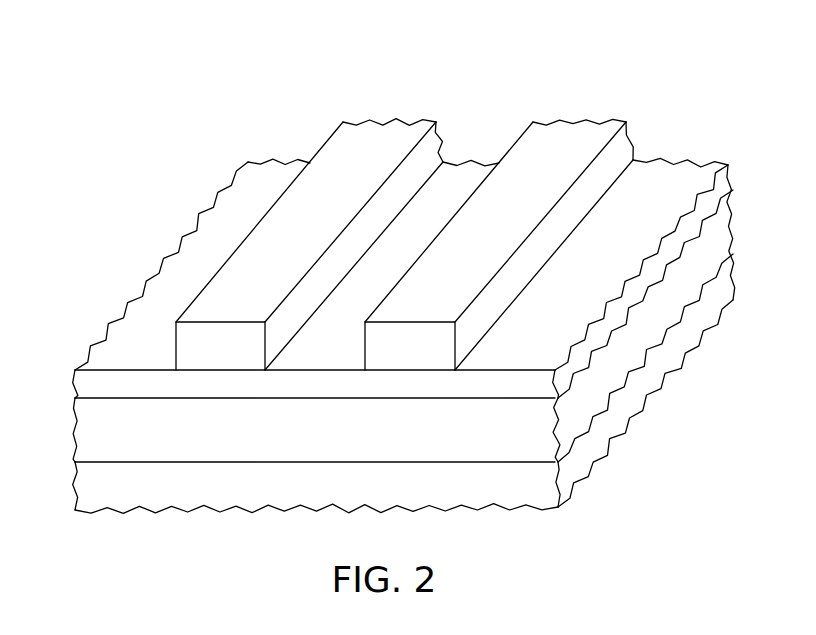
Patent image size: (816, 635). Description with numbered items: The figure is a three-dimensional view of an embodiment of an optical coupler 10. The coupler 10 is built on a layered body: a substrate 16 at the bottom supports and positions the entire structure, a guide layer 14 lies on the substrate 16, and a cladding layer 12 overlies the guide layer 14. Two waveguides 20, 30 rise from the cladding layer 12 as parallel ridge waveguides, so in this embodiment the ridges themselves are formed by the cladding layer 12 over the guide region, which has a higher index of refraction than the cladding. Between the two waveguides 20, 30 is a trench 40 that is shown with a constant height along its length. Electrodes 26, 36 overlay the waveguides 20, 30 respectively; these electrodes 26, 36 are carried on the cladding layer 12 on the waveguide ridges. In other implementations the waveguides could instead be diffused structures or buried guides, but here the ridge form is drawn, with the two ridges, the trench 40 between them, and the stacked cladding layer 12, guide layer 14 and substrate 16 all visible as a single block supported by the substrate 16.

The coupler 10 is at (227, 85).
The cladding layer 12 is at (86, 389).
The guide layer 14 is at (86, 444).
The substrate 16 is at (86, 494).
The waveguide 20 is at (186, 352).
The electrode 26 is at (400, 127).
The waveguide 30 is at (377, 352).
The electrode 36 is at (588, 127).
The trench 40 is at (465, 177).